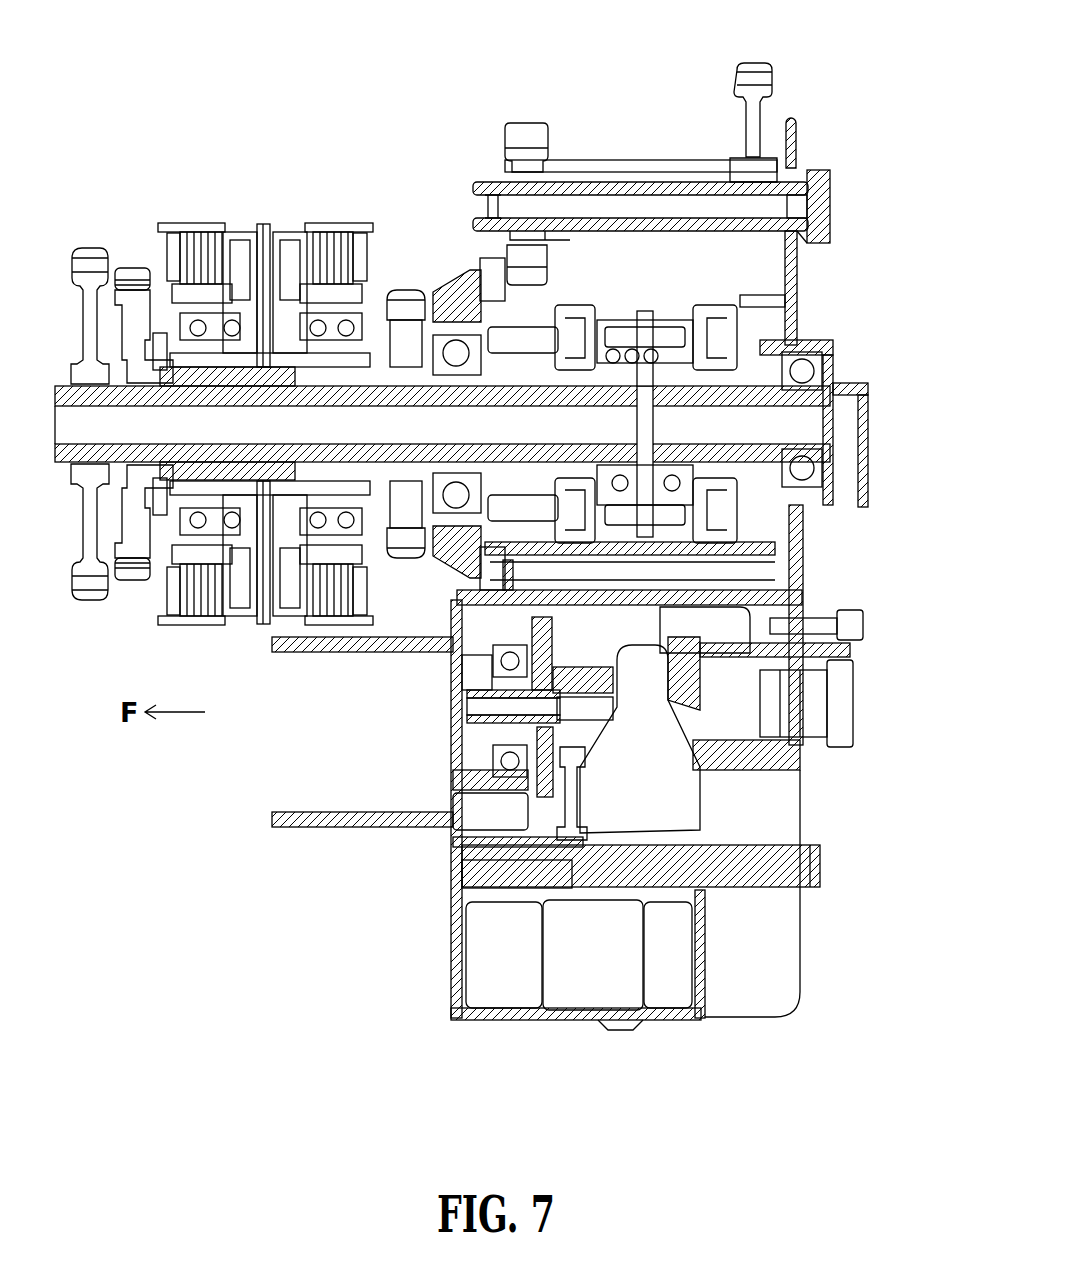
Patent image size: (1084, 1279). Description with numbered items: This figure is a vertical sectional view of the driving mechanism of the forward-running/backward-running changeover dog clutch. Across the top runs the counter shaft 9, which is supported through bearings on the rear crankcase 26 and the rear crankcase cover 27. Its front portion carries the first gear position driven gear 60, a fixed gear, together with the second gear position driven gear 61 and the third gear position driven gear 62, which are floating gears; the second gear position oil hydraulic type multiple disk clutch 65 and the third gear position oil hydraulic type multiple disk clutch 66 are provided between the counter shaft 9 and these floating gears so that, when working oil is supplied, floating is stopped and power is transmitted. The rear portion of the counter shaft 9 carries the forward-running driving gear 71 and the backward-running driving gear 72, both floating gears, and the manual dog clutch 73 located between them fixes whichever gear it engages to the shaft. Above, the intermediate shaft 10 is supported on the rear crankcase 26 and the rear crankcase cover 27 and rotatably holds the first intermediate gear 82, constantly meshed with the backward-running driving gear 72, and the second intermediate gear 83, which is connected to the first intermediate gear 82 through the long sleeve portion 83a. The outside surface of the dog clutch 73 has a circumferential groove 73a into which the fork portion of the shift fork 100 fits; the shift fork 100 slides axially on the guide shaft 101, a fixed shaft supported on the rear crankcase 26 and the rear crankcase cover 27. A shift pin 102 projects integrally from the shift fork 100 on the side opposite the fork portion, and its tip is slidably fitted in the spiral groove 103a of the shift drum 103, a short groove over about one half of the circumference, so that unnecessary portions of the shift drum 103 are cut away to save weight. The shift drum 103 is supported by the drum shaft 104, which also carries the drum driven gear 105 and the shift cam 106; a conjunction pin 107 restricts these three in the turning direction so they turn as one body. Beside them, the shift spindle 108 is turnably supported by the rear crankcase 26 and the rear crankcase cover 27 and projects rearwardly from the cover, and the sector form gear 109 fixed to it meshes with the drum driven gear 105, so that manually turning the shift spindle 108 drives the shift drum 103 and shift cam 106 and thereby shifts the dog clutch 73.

The counter shaft 9 is at (838, 390).
The intermediate shaft 10 is at (795, 172).
The rear crankcase 26 is at (437, 285).
The rear crankcase cover 27 is at (797, 125).
The first gear position driven gear 60 is at (86, 248).
The second gear position driven gear 61 is at (133, 268).
The third gear position driven gear 62 is at (398, 288).
The second gear position oil hydraulic type multiple disk clutch 65 is at (200, 222).
The third gear position oil hydraulic type multiple disk clutch 66 is at (303, 222).
The forward-running driving gear 71 is at (510, 333).
The backward-running driving gear 72 is at (775, 352).
The manual dog clutch 73 is at (760, 287).
The circumferential groove 73a is at (680, 294).
The first intermediate gear 82 is at (755, 63).
The second intermediate gear 83 is at (520, 123).
The long sleeve portion 83a is at (625, 182).
The shift fork 100 is at (665, 520).
The guide shaft 101 is at (800, 568).
The shift pin 102 is at (700, 620).
The shift drum 103 is at (760, 665).
The spiral groove 103a is at (720, 722).
The drum shaft 104 is at (520, 707).
The drum driven gear 105 is at (557, 738).
The shift cam 106 is at (527, 823).
The conjunction pin 107 is at (453, 683).
The shift spindle 108 is at (790, 880).
The sector form gear 109 is at (453, 883).